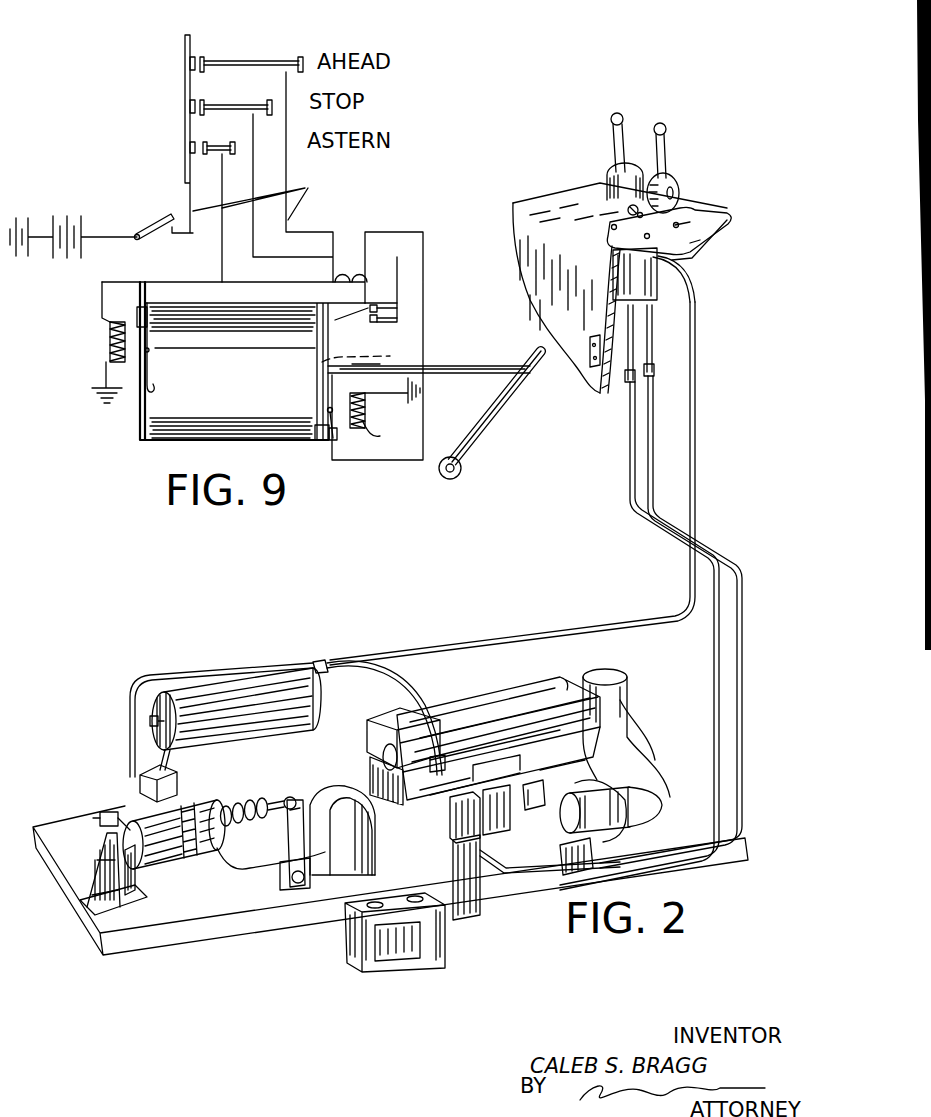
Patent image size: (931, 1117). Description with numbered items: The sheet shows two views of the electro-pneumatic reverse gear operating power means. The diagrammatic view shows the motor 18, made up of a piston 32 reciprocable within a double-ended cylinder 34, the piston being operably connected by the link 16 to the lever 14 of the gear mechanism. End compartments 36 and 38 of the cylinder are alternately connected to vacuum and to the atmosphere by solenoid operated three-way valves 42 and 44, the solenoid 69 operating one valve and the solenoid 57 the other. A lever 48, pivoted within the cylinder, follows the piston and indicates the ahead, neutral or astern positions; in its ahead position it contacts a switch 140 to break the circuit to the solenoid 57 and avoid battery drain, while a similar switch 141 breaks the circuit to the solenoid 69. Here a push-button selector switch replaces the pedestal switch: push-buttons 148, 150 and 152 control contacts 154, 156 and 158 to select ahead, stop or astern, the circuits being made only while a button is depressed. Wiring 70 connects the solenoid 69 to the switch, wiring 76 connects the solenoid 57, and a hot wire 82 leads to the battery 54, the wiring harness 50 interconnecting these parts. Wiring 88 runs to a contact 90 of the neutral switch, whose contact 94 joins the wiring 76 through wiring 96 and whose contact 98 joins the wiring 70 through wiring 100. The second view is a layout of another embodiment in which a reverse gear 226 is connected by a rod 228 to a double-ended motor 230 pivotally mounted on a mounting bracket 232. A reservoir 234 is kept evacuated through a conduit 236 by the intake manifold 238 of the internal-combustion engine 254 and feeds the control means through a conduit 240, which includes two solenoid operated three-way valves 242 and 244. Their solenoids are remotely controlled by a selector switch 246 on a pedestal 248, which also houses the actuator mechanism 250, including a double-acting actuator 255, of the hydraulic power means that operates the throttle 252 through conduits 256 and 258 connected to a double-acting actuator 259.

In FIG. 9, the lever 14 is at (497, 416).
In FIG. 9, the link 16 is at (487, 368).
In FIG. 9, the motor 18 is at (133, 436).
In FIG. 9, the piston 32 is at (312, 418).
In FIG. 9, the double-ended cylinder 34 is at (138, 413).
In FIG. 9, the end compartment 36 is at (163, 432).
In FIG. 9, the end compartment 38 is at (338, 442).
In FIG. 9, the three-way valve 42 is at (110, 342).
In FIG. 9, the three-way valve 44 is at (414, 445).
In FIG. 9, the lever 48 is at (370, 355).
In FIG. 9, the wiring harness 50 is at (266, 198).
In FIG. 9, the battery 54 is at (63, 210).
In FIG. 9, the solenoid 57 is at (365, 404).
In FIG. 9, the solenoid 69 is at (108, 352).
In FIG. 9, the wiring 70 is at (290, 217).
In FIG. 9, the wiring 76 is at (222, 257).
In FIG. 9, the hot wire 82 is at (192, 198).
In FIG. 9, the wiring 88 is at (330, 253).
In FIG. 9, the contact 90 is at (378, 317).
In FIG. 9, the contact 94 is at (378, 307).
In FIG. 9, the wiring 96 is at (367, 263).
In FIG. 9, the contact 98 is at (378, 321).
In FIG. 9, the wiring 100 is at (398, 278).
In FIG. 9, the switch 140 is at (330, 437).
In FIG. 9, the switch 141 is at (140, 326).
In FIG. 9, the push-button 148 is at (233, 60).
In FIG. 9, the stop push-button 150 is at (218, 104).
In FIG. 9, the push-button 152 is at (212, 148).
In FIG. 9, the contact 154 is at (189, 64).
In FIG. 9, the contact 156 is at (189, 107).
In FIG. 9, the contact 158 is at (189, 150).
In FIG. 2, the reverse gear 226 is at (330, 840).
In FIG. 2, the rod 228 is at (285, 800).
In FIG. 2, the motor 230 is at (160, 852).
In FIG. 2, the mounting bracket 232 is at (102, 865).
In FIG. 2, the reservoir 234 is at (227, 705).
In FIG. 2, the conduit 236 is at (403, 683).
In FIG. 2, the intake manifold 238 is at (543, 723).
In FIG. 2, the conduit 240 is at (167, 748).
In FIG. 2, the three-way valve 242 is at (98, 820).
In FIG. 2, the three-way valve 244 is at (233, 858).
In FIG. 2, the selector switch 246 is at (669, 192).
In FIG. 2, the pedestal 248 is at (660, 227).
In FIG. 2, the actuator mechanism 250 is at (608, 178).
In FIG. 2, the throttle 252 is at (509, 803).
In FIG. 2, the internal-combustion engine 254 is at (383, 722).
In FIG. 2, the double-acting actuator 255 is at (635, 287).
In FIG. 2, the conduit 256 is at (742, 643).
In FIG. 2, the conduit 258 is at (713, 667).
In FIG. 2, the double-acting actuator 259 is at (467, 810).